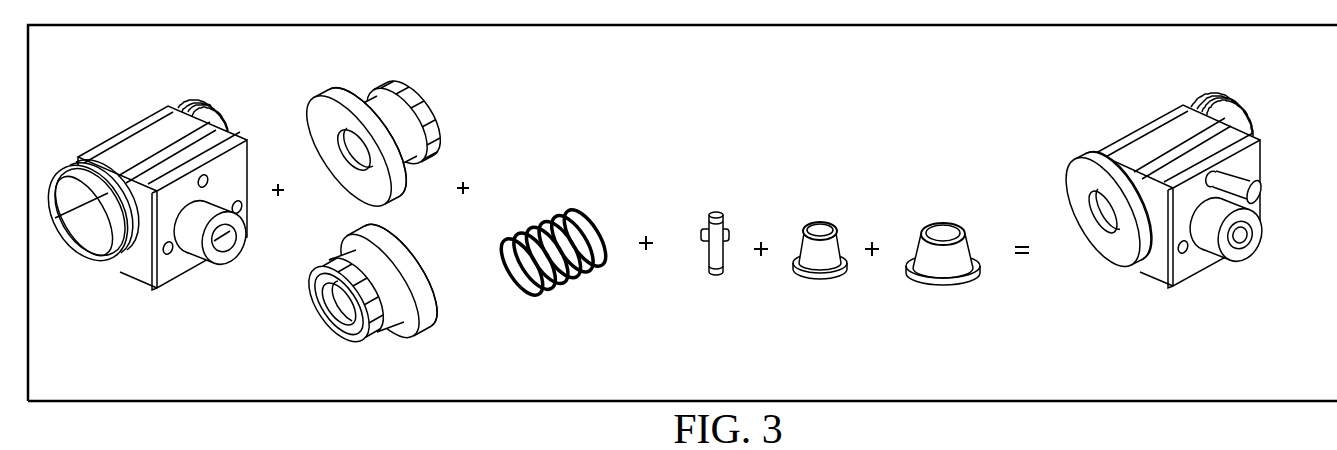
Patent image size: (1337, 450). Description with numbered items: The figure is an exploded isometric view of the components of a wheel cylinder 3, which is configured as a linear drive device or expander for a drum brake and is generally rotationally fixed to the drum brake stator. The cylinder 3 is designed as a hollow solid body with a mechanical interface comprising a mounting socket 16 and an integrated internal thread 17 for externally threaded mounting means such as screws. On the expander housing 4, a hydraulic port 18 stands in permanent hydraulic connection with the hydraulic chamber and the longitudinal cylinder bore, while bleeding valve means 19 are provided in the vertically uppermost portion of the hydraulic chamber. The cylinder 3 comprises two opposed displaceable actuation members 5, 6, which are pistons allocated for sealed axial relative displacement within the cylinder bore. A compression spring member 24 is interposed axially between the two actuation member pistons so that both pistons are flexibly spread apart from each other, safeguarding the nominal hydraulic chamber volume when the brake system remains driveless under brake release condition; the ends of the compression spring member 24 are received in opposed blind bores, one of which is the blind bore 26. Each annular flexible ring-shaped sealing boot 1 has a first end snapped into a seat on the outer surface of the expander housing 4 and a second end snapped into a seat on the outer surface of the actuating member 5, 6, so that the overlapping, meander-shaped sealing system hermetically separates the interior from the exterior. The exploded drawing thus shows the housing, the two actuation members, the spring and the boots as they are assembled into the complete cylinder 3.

The sealing boot 1 is at (760, 224).
The wheel cylinder 3 is at (675, 195).
The expander housing 4 is at (177, 163).
The actuation member 5 is at (353, 153).
The actuation member 6 is at (359, 304).
The mounting socket 16 is at (167, 232).
The internal thread 17 is at (241, 209).
The hydraulic port 18 is at (233, 253).
The bleeding valve means 19 is at (712, 211).
The compression spring member 24 is at (556, 222).
The blind bore 26 is at (340, 312).